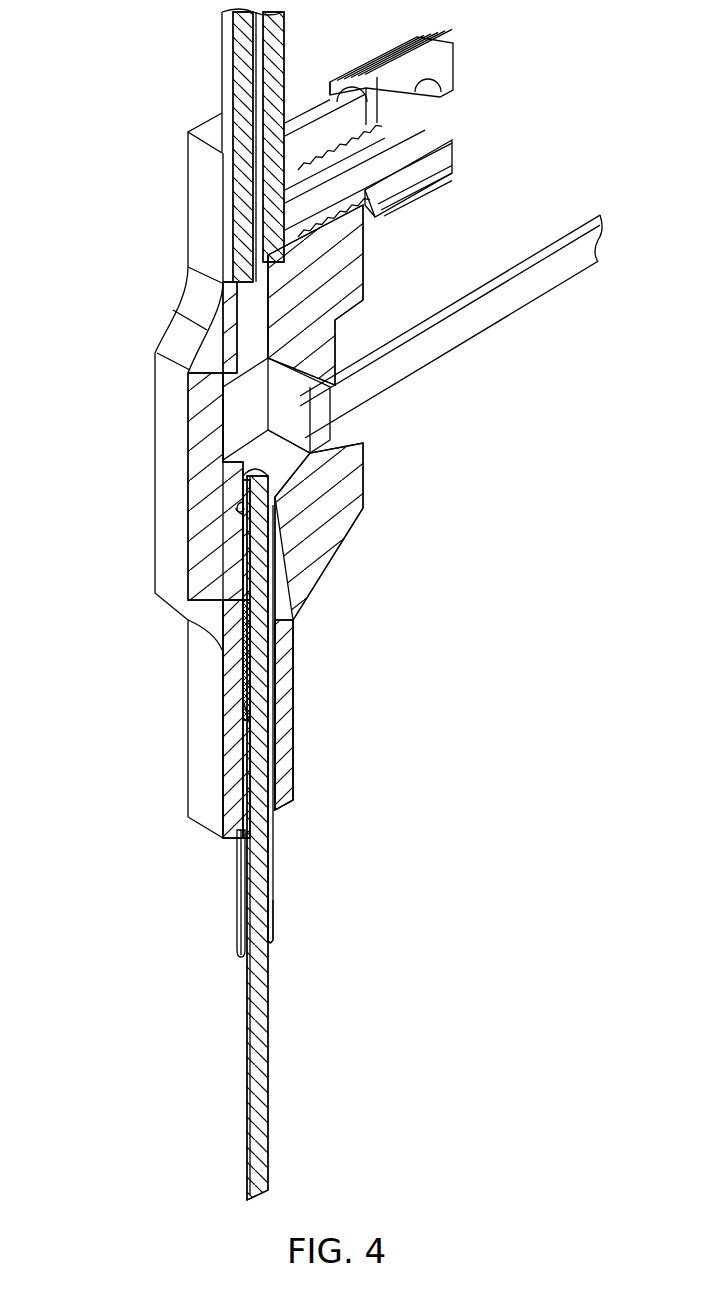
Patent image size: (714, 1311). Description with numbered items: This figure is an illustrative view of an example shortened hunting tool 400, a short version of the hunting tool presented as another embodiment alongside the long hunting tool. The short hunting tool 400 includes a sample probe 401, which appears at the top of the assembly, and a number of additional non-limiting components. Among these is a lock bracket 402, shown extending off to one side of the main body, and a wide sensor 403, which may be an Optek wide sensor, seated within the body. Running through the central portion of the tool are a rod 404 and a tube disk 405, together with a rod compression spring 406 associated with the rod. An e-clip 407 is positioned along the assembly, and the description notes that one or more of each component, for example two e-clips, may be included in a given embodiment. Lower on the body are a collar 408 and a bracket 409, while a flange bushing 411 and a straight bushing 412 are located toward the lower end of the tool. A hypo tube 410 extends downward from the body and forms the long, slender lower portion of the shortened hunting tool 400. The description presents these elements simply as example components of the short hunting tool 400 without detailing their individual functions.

The shortened hunting tool 400 is at (319, 604).
The sample probe 401 is at (247, 40).
The lock bracket 402 is at (420, 132).
The wide sensor 403 is at (243, 410).
The rod 404 is at (240, 492).
The tube disk 405 is at (240, 557).
The rod compression spring 406 is at (240, 680).
The e-clip 407 is at (272, 706).
The collar 408 is at (230, 783).
The bracket 409 is at (247, 720).
The hypo tube 410 is at (248, 1013).
The flange bushing 411 is at (243, 868).
The straight bushing 412 is at (270, 943).